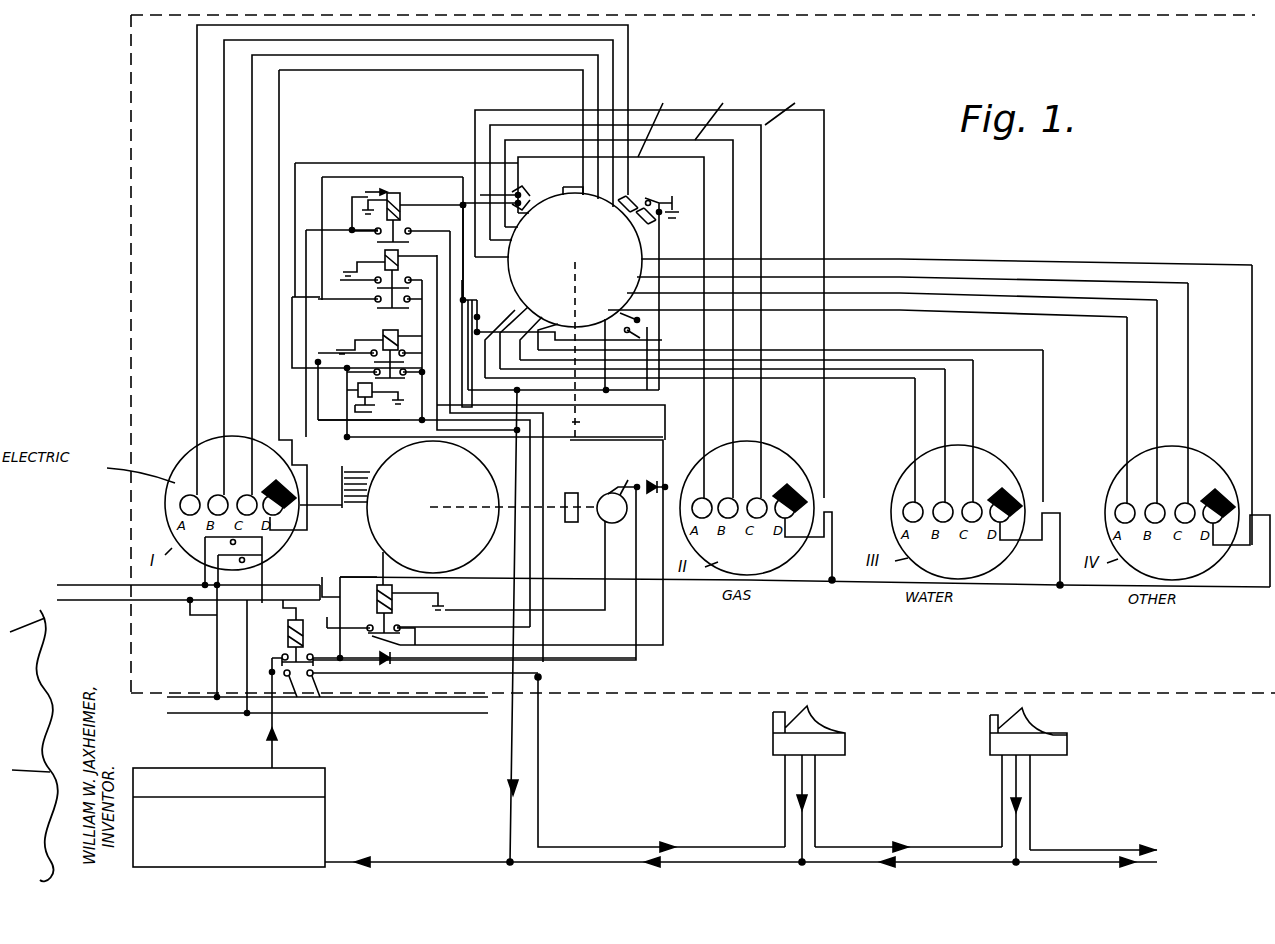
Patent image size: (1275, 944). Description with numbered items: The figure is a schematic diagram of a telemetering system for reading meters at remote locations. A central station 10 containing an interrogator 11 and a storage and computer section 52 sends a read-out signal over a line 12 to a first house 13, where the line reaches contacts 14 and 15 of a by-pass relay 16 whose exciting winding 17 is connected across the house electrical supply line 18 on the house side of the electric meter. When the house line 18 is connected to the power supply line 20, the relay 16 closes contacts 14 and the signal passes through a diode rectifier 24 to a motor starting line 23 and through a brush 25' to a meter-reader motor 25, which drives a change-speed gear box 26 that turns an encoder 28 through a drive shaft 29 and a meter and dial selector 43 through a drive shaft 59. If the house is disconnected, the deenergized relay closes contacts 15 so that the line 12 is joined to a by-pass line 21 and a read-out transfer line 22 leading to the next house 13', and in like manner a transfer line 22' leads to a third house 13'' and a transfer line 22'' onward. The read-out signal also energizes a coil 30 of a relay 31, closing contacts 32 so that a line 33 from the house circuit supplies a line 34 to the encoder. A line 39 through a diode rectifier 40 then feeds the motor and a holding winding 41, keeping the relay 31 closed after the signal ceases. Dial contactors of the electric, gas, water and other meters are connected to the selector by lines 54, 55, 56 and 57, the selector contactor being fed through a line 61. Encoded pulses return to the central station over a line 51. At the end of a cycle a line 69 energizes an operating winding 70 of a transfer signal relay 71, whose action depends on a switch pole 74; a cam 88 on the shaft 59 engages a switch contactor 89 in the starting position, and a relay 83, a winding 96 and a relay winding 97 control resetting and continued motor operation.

The central station 10 is at (253, 817).
The interrogator 11 is at (251, 783).
The line 12 is at (252, 713).
The house 13 is at (633, 710).
The house 13' is at (818, 776).
The house 13'' is at (1035, 778).
The contacts 14 is at (295, 656).
The contacts 15 is at (411, 698).
The by-pass relay 16 is at (295, 621).
The exciting winding 17 is at (273, 644).
The electrical supply line 18 is at (188, 639).
The power supply line 20 is at (327, 714).
The by-pass line 21 is at (327, 700).
The read-out transfer line 22 is at (846, 764).
The transfer line 22' is at (802, 810).
The transfer line 22'' is at (1016, 810).
The motor starting line 23 is at (609, 676).
The diode rectifier 24 is at (488, 684).
The meter-reader motor 25 is at (541, 548).
The brush 25' is at (623, 474).
The change-speed gear box 26 is at (581, 495).
The encoder 28 is at (420, 507).
The drive shaft 29 is at (513, 522).
The coil 30 is at (372, 568).
The relay 31 is at (374, 617).
The contacts 32 is at (421, 650).
The line 33 is at (310, 580).
The line 34 is at (359, 426).
The line 39 is at (538, 530).
The diode rectifier 40 is at (662, 472).
The holding winding 41 is at (418, 601).
The meter and dial selector 43 is at (562, 312).
The line 51 is at (474, 627).
The storage and computer section 52 is at (260, 831).
The line 54 is at (638, 263).
The line 55 is at (653, 271).
The line 56 is at (696, 279).
The line 57 is at (701, 307).
The drive shaft 59 is at (591, 422).
The line 61 is at (342, 320).
The line 69 is at (301, 357).
The operating winding 70 is at (386, 208).
The transfer signal relay 71 is at (364, 190).
The switch pole 74 is at (535, 176).
The relay 83 is at (377, 274).
The cam 88 is at (621, 219).
The switch contactor 89 is at (663, 194).
The winding 96 is at (363, 397).
The relay winding 97 is at (370, 352).